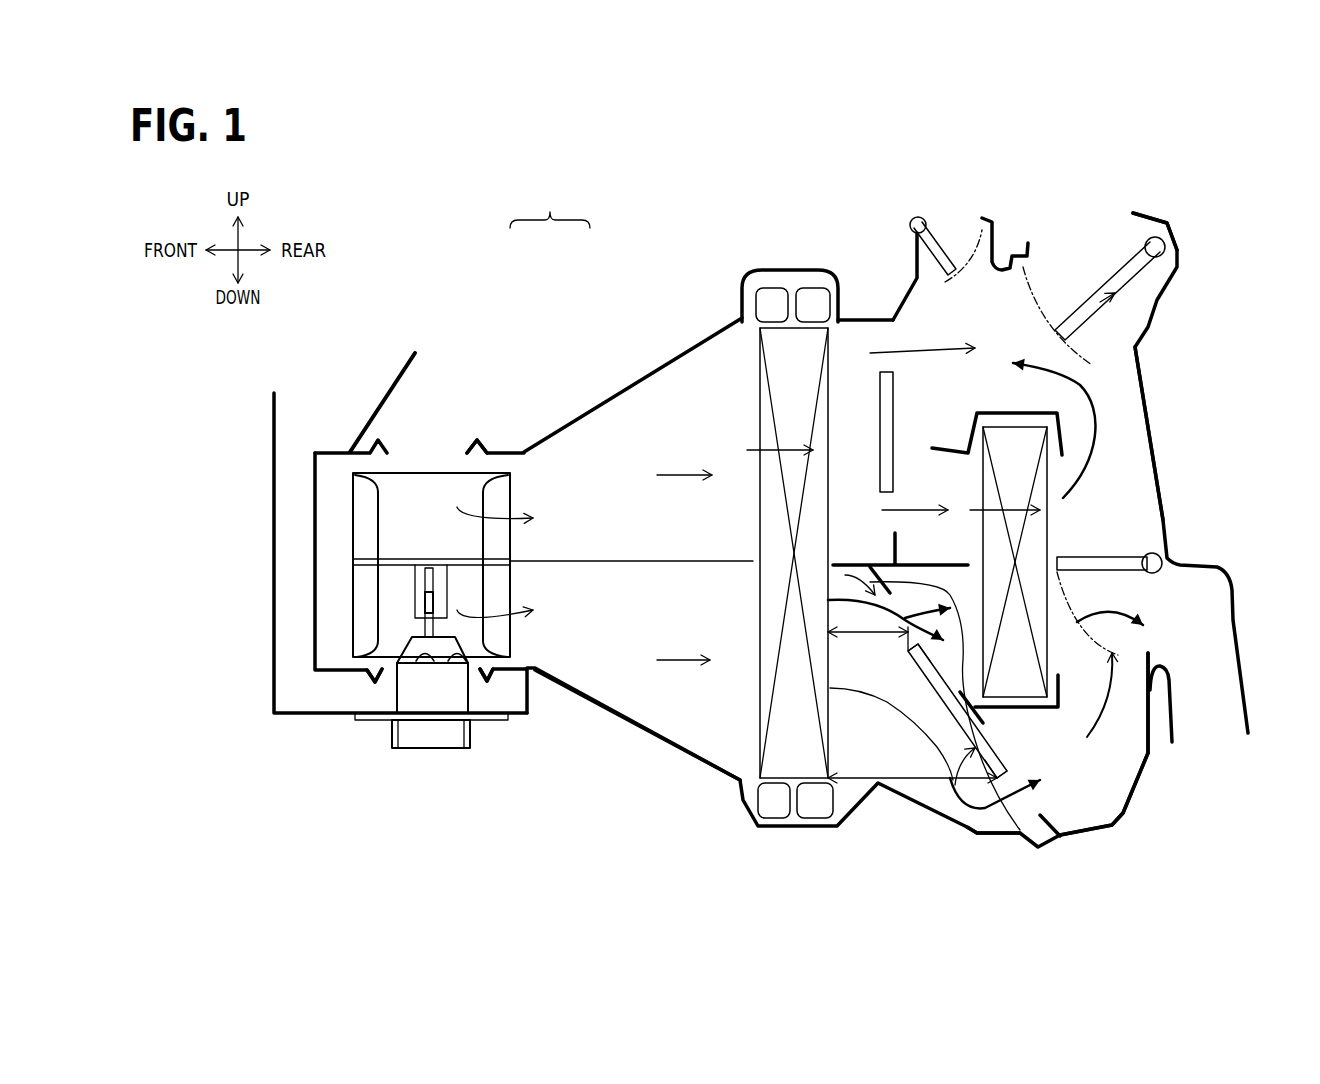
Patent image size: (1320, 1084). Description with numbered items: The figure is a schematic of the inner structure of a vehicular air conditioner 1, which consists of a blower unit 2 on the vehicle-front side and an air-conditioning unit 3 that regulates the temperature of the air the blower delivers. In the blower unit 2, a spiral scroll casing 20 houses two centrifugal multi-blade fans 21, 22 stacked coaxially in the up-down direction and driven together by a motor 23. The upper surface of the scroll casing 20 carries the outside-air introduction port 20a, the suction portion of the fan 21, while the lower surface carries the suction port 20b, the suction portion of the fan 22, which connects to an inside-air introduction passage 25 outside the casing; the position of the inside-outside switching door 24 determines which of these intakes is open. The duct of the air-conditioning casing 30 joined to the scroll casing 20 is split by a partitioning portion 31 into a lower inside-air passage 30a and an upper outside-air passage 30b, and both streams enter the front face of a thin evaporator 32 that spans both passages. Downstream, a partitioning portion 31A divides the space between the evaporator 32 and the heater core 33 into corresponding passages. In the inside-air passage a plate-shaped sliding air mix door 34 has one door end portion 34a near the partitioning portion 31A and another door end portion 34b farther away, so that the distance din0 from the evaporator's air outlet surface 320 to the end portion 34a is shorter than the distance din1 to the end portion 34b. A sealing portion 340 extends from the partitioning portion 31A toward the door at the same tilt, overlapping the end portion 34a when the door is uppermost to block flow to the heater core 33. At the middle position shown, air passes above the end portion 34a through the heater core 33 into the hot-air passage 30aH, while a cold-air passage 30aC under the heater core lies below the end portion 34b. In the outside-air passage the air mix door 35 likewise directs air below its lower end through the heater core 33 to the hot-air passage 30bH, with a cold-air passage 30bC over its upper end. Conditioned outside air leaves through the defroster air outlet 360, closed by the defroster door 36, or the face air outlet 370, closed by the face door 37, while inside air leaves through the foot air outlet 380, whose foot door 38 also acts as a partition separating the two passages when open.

The vehicular air conditioner 1 is at (550, 201).
The blower unit 2 is at (500, 312).
The air-conditioning unit 3 is at (633, 295).
The scroll casing 20 is at (313, 534).
The outside-air introduction port 20a is at (470, 440).
The suction port 20b is at (383, 676).
The fan 21 is at (508, 497).
The fan 22 is at (512, 633).
The motor 23 is at (433, 694).
The inside-outside switching door 24 is at (383, 417).
The inside-air introduction passage 25 is at (291, 601).
The air-conditioning casing 30 is at (695, 761).
The inside-air passage 30a is at (622, 695).
The outside-air passage 30b is at (607, 430).
The cold-air passage 30aC is at (967, 818).
The hot-air passage 30aH is at (1118, 745).
The cold-air passage 30bC is at (885, 340).
The hot-air passage 30bH is at (1058, 522).
The partitioning portion 31 is at (660, 565).
The partitioning portion 31A is at (910, 563).
The evaporator 32 is at (757, 393).
The air outlet surface 320 is at (830, 688).
The heater core 33 is at (1117, 797).
The sealing portion 340 is at (1055, 652).
The air mix door 34 is at (957, 783).
The one door end portion 34a is at (908, 653).
The other door end portion 34b is at (997, 785).
The air mix door 35 is at (878, 370).
The defroster door 36 is at (932, 245).
The defroster air outlet 360 is at (983, 213).
The face door 37 is at (1117, 288).
The face air outlet 370 is at (1133, 213).
The foot door 38 is at (1105, 562).
The foot air outlet 380 is at (1148, 653).
The distance din0 is at (865, 635).
The distance din1 is at (923, 780).